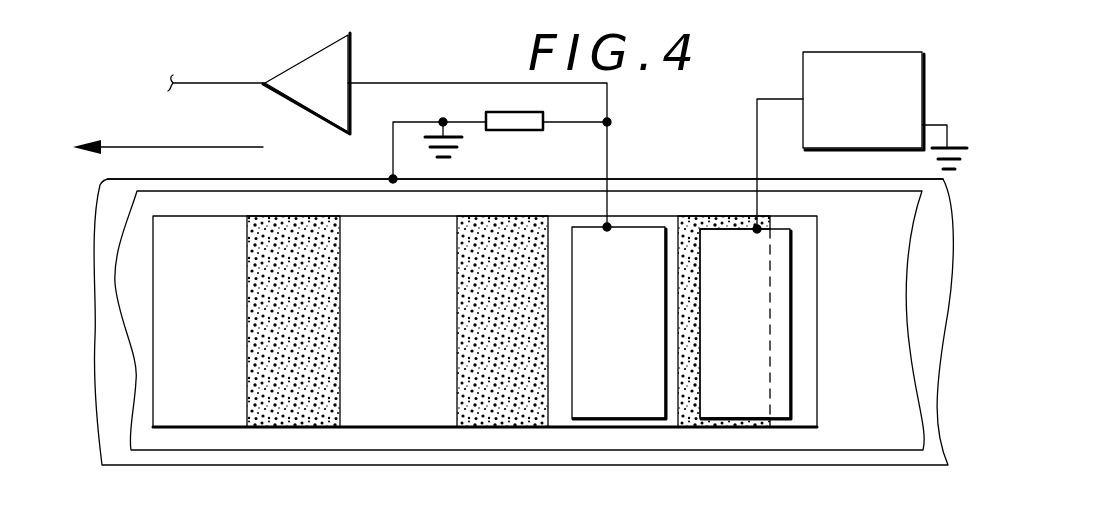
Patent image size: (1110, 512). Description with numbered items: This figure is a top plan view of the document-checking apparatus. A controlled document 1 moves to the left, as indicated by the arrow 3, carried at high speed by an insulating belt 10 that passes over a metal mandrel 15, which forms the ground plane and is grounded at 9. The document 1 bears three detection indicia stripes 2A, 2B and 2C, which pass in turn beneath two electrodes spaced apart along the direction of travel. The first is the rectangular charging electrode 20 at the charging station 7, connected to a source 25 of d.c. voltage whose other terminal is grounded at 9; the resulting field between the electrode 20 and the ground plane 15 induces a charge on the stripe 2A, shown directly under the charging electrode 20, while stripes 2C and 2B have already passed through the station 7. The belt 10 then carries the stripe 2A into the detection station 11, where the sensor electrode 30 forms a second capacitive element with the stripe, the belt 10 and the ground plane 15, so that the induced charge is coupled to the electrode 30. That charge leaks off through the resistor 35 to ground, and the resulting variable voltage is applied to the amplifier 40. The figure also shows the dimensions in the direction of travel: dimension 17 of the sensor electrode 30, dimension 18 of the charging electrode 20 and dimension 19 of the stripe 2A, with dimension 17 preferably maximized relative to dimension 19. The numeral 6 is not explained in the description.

The controlled document 1 is at (805, 258).
The detection indicia stripe 2A is at (697, 238).
The detection indicia stripe 2B is at (482, 301).
The detection indicia stripe 2C is at (263, 295).
The arrow 3 is at (218, 137).
The document 6 is at (212, 408).
The charging station 7 is at (786, 150).
The ground 9 is at (446, 120).
The belt 10 is at (856, 209).
The detection station 11 is at (602, 172).
The mandrel 15 is at (261, 179).
The first dimension of sensor electrode 17 is at (663, 325).
The first dimension of charging electrode 18 is at (788, 325).
The first dimension of stripe 19 is at (768, 382).
The charging electrode 20 is at (741, 246).
The source of d.c. voltage 25 is at (803, 91).
The sensor electrode 30 is at (635, 247).
The resistor 35 is at (502, 121).
The amplifier 40 is at (330, 57).